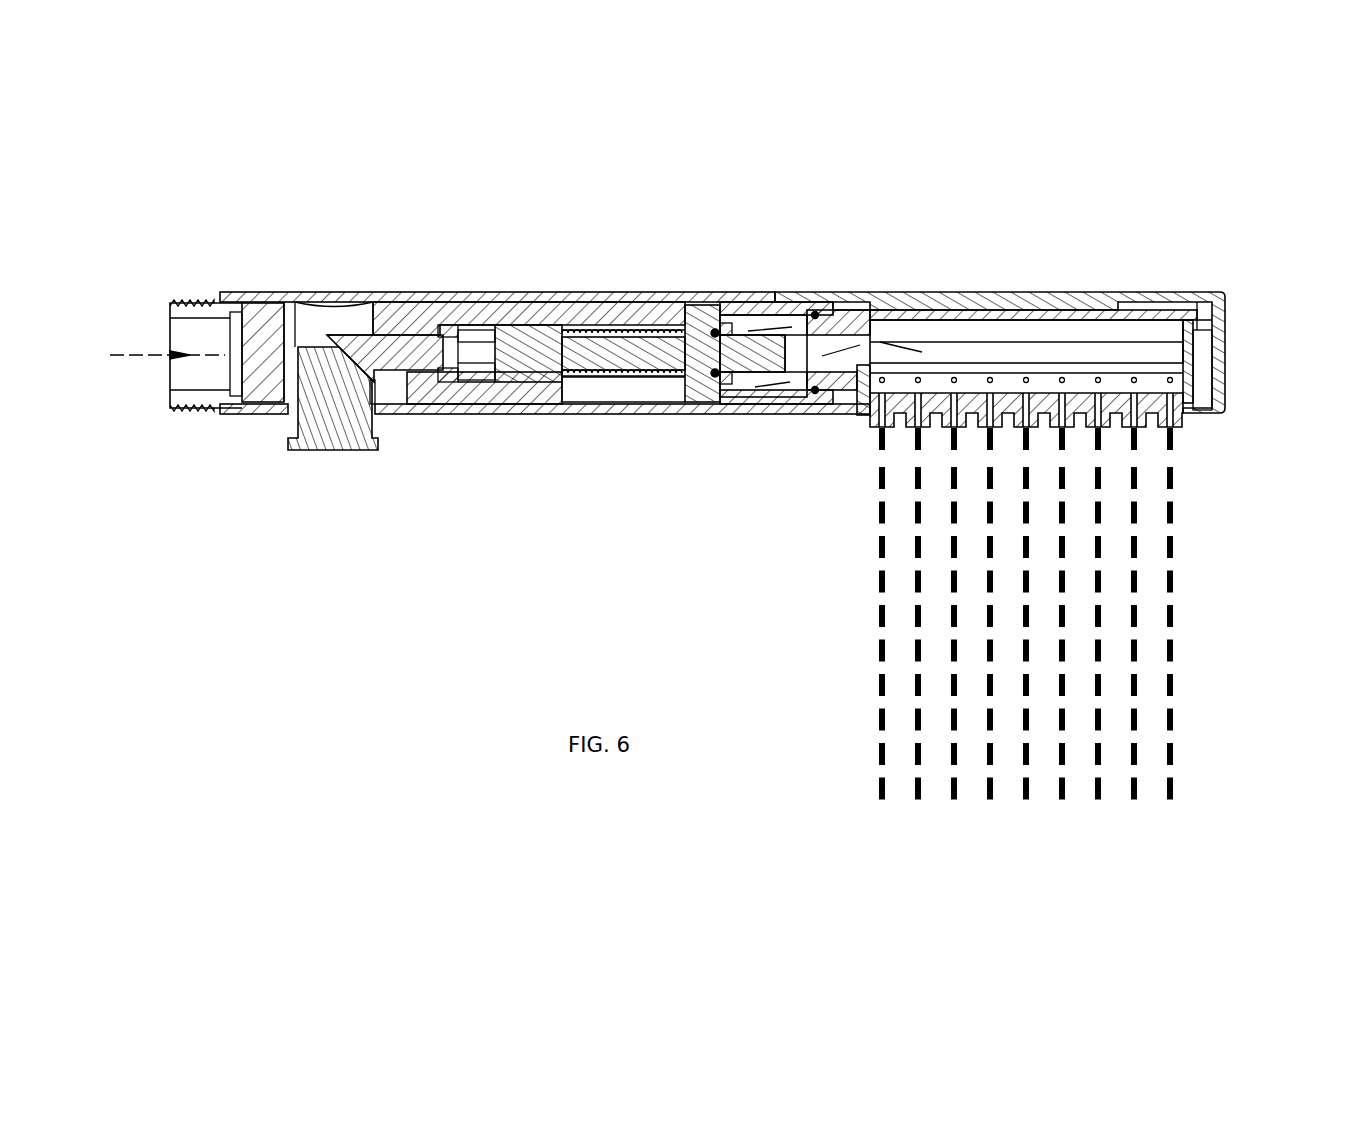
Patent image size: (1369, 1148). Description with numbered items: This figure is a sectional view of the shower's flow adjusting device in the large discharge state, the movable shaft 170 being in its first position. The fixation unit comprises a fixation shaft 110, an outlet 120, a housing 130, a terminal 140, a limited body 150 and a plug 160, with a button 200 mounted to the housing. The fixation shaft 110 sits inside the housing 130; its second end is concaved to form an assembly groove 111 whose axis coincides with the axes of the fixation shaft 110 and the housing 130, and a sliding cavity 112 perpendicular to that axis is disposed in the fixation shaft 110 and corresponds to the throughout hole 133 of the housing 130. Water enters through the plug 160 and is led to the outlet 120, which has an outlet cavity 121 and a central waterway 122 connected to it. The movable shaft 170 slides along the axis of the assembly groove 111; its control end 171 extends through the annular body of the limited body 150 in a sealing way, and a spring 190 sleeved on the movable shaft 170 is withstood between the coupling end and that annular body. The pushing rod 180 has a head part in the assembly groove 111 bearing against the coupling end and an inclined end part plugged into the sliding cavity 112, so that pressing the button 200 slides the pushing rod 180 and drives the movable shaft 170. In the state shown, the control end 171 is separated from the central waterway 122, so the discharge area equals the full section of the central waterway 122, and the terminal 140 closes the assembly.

The fixation shaft 110 is at (448, 318).
The assembly groove 111 is at (612, 388).
The sliding cavity 112 is at (310, 323).
The outlet 120 is at (1193, 350).
The outlet cavity 121 is at (1013, 335).
The central waterway 122 is at (828, 345).
The housing 130 is at (400, 298).
The throughout hole 133 is at (375, 413).
The terminal 140 is at (737, 308).
The limited body 150 is at (733, 378).
The plug 160 is at (207, 367).
The movable shaft 170 is at (518, 343).
The control end 171 is at (770, 355).
The pushing rod 180 is at (395, 342).
The spring 190 is at (604, 323).
The button 200 is at (342, 415).